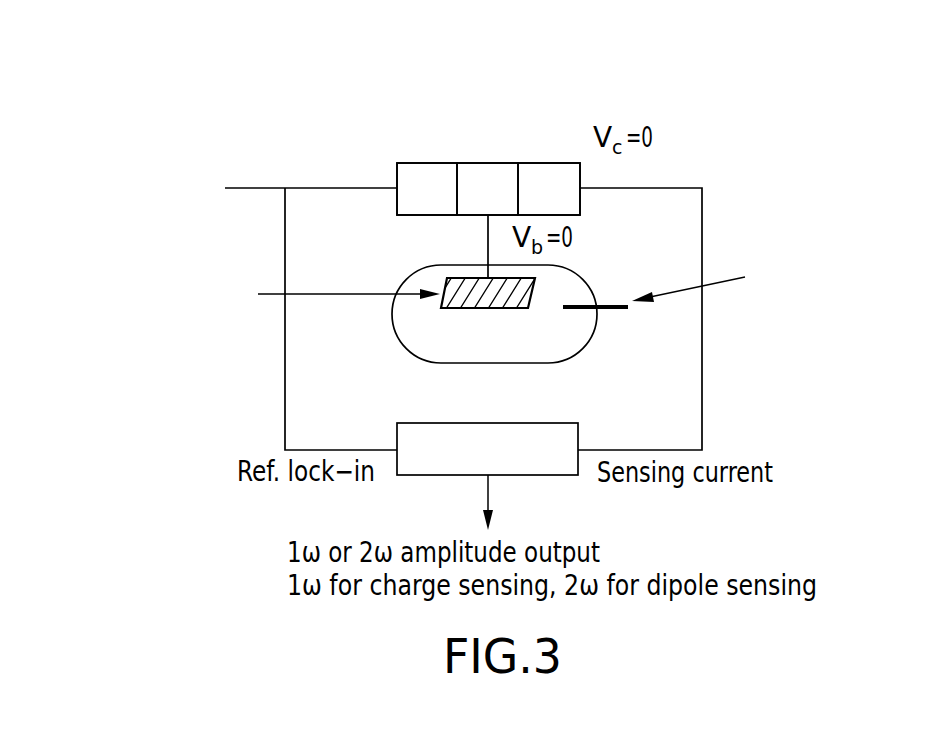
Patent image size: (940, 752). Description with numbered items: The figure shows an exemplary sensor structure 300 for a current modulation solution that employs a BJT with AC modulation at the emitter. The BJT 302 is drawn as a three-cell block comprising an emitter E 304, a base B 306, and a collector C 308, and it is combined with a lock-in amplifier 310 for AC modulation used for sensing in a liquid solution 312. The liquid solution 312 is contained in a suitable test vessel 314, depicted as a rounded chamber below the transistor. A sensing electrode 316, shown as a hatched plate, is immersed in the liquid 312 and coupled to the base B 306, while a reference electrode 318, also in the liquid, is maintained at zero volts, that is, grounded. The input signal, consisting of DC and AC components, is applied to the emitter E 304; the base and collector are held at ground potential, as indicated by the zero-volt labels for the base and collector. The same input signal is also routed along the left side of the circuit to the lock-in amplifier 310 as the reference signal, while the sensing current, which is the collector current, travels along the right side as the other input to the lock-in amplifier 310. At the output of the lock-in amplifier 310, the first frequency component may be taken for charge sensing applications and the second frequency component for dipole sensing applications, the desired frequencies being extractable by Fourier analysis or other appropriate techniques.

The sensor structure 300 is at (212, 573).
The BJT 302 is at (580, 92).
The emitter E 304 is at (430, 163).
The base B 306 is at (488, 163).
The collector C 308 is at (548, 163).
The lock-in amplifier 310 is at (578, 437).
The liquid solution 312 is at (570, 342).
The test vessel 314 is at (415, 270).
The sensing electrode 316 is at (447, 310).
The reference electrode 318 is at (608, 305).